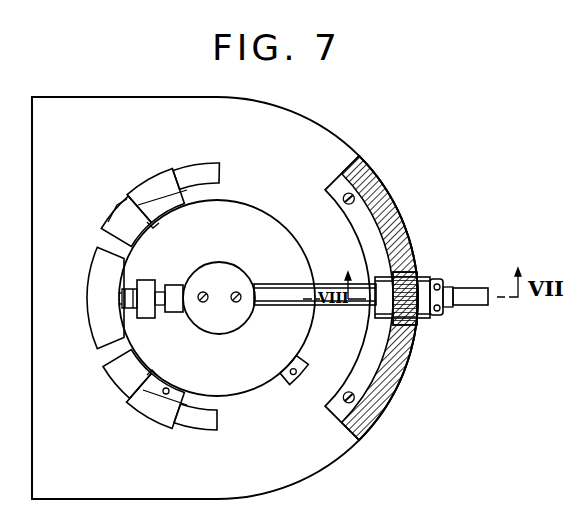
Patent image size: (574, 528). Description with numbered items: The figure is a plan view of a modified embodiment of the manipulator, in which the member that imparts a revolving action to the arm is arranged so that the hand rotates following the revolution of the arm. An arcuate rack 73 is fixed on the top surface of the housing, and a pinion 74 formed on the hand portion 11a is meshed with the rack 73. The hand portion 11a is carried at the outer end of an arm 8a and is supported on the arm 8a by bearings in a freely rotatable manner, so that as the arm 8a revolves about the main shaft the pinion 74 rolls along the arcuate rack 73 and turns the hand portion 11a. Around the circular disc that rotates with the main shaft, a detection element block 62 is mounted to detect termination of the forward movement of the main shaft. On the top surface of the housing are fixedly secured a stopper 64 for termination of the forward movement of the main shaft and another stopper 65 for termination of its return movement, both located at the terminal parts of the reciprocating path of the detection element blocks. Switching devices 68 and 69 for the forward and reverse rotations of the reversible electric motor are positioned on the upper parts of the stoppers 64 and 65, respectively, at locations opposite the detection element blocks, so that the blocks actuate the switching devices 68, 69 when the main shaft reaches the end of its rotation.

The arm 8a is at (270, 306).
The hand portion 11a is at (422, 293).
The detection element block 62 is at (291, 378).
The stopper 64 is at (127, 232).
The stopper 65 is at (130, 370).
The switching device 68 is at (160, 207).
The switching device 69 is at (172, 398).
The arcuate rack 73 is at (388, 190).
The pinion 74 is at (412, 323).